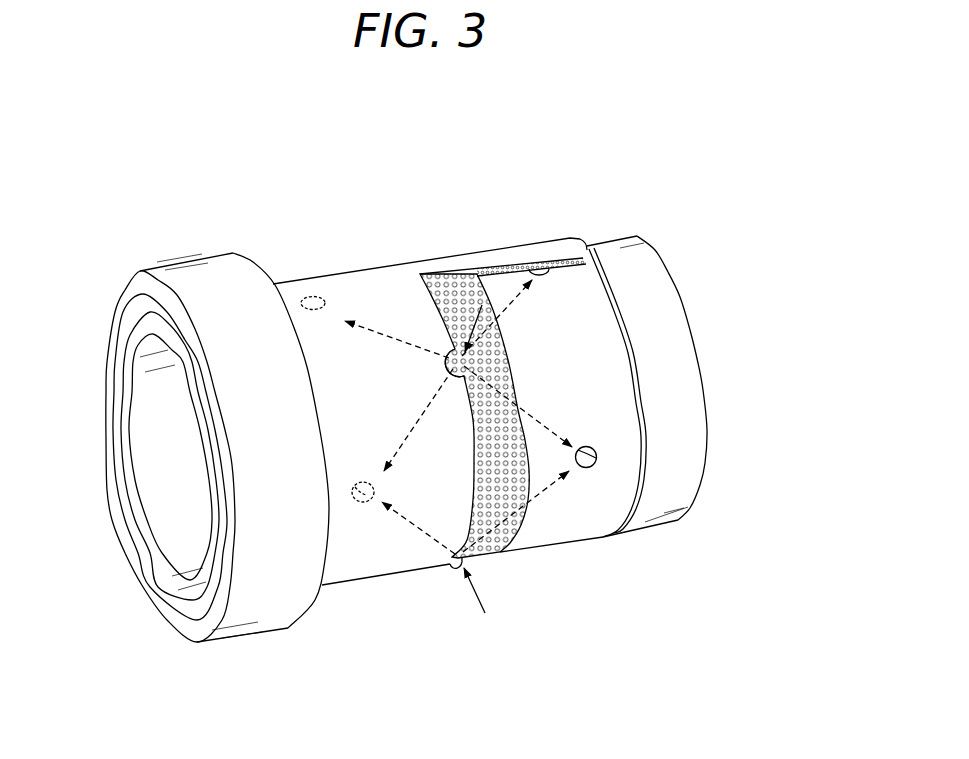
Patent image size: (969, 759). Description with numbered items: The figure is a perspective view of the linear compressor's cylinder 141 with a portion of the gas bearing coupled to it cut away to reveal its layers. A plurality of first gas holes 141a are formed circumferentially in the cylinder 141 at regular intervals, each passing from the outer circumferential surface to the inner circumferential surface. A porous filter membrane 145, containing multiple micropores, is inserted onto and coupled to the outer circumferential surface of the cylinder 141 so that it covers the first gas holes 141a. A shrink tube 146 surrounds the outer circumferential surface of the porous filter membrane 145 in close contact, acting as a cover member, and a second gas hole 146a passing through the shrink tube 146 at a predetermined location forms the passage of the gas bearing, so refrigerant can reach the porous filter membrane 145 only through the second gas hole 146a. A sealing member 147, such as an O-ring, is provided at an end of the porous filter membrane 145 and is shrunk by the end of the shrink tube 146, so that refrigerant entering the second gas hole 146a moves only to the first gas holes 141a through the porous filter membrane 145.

The cylinder 141 is at (592, 350).
The first gas hole 141a is at (310, 297).
The porous filter membrane 145 is at (453, 286).
The shrink tube 146 is at (340, 284).
The second gas hole 146a is at (452, 354).
The sealing member 147 is at (609, 293).